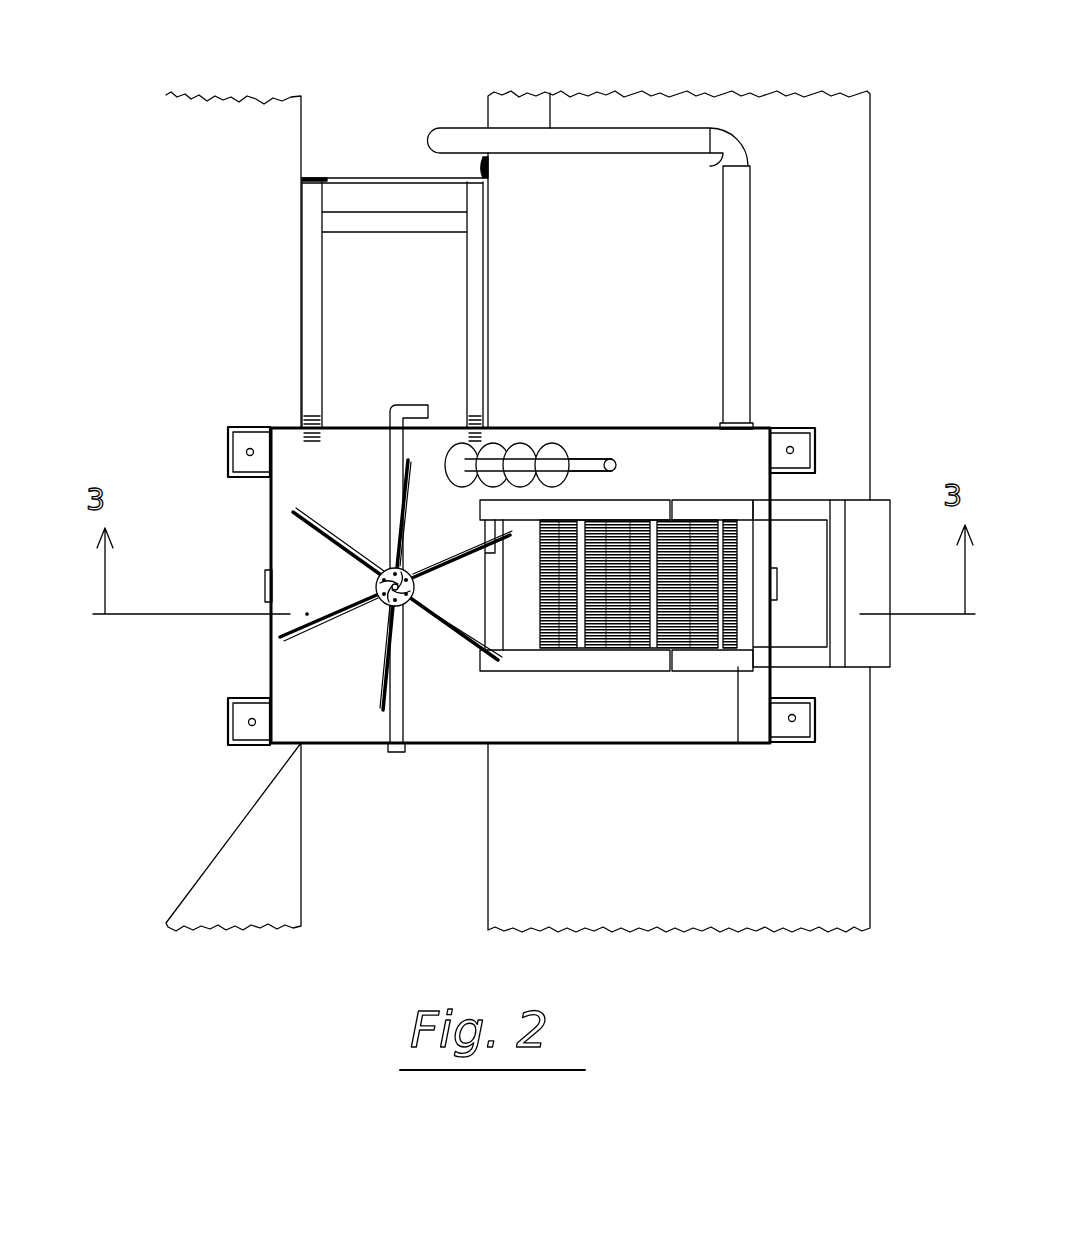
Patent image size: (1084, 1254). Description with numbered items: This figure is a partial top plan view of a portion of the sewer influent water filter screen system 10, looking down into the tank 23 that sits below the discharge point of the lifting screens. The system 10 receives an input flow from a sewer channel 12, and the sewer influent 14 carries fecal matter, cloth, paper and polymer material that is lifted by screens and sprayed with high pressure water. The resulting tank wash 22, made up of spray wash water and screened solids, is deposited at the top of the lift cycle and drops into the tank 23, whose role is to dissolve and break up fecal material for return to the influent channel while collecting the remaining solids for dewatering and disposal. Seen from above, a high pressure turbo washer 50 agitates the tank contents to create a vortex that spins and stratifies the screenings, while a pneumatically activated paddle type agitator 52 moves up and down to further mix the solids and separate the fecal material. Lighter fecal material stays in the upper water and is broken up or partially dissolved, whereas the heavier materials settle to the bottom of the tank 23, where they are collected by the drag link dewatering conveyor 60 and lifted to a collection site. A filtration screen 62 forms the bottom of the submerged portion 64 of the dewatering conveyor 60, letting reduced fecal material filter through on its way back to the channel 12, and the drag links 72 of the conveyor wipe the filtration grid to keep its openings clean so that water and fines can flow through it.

The sewer influent water filter screen system 10 is at (514, 63).
The sewer channel 12 is at (490, 864).
The sewer influent 14 is at (405, 827).
The tank wash 22 is at (610, 725).
The tank 23 is at (270, 549).
The high pressure turbo washer 50 is at (376, 588).
The paddle type agitator 52 is at (518, 448).
The drag link dewatering conveyor 60 is at (630, 508).
The filtration screen 62 is at (622, 633).
The submerged portion 64 is at (548, 633).
The drag links 72 is at (720, 647).